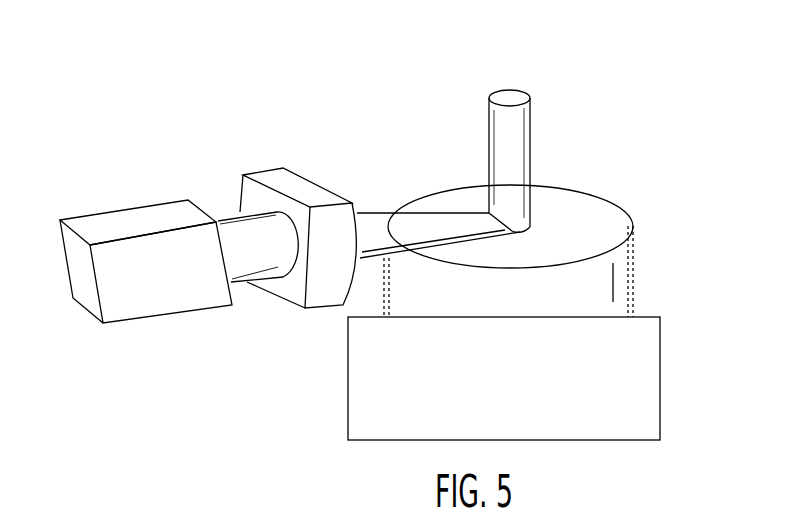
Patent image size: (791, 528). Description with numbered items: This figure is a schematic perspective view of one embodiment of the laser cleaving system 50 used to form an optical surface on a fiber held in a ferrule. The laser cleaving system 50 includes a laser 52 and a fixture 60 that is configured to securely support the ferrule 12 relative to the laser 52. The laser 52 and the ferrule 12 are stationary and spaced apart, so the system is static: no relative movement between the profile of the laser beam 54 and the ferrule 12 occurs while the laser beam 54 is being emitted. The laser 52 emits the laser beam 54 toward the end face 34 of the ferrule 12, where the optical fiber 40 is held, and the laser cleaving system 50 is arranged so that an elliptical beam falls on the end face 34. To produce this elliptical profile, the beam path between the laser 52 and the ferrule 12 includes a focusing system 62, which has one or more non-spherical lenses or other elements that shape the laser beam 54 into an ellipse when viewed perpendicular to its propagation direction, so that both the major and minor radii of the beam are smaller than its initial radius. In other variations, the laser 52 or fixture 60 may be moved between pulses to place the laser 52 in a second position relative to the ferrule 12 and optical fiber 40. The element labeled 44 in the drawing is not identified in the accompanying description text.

The laser cleaving system 50 is at (205, 118).
The laser 52 is at (100, 220).
The focusing system 62 is at (305, 308).
The laser beam 54 is at (392, 213).
The optical fiber 40 is at (489, 108).
The rod 44 is at (532, 135).
The end face 34 is at (580, 207).
The ferrule 12 is at (633, 245).
The fixture 60 is at (494, 390).